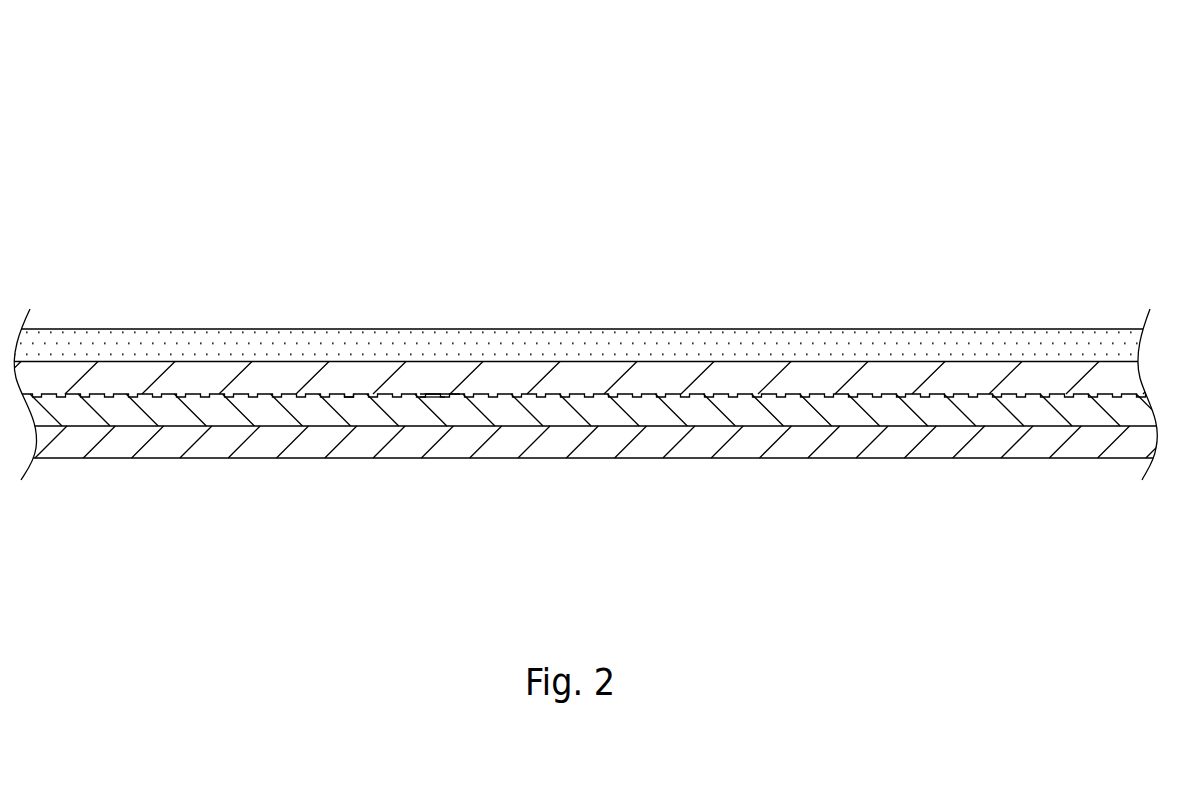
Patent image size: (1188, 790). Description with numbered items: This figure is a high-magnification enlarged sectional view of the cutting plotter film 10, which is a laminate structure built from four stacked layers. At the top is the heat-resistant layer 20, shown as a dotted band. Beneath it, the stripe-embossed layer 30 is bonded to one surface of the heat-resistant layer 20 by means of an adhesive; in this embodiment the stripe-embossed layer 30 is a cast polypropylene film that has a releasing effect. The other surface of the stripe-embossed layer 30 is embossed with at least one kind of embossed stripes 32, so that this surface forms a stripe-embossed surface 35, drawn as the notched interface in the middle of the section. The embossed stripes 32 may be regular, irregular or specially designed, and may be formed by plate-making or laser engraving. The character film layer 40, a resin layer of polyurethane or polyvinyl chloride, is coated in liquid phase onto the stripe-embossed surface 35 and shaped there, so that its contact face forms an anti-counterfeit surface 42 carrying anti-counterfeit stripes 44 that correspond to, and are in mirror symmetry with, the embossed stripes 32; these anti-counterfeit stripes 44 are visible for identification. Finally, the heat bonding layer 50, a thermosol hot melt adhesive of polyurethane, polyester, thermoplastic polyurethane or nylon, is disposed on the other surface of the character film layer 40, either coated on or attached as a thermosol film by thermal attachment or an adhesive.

The cutting plotter film 10 is at (853, 193).
The heat-resistant layer 20 is at (968, 328).
The stripe-embossed layer 30 is at (1062, 375).
The embossed stripes 32 is at (440, 395).
The stripe-embossed surface 35 is at (242, 392).
The character film layer 40 is at (1080, 412).
The anti-counterfeit surface 42 is at (344, 397).
The anti-counterfeit stripes 44 is at (432, 397).
The heat bonding layer 50 is at (788, 458).